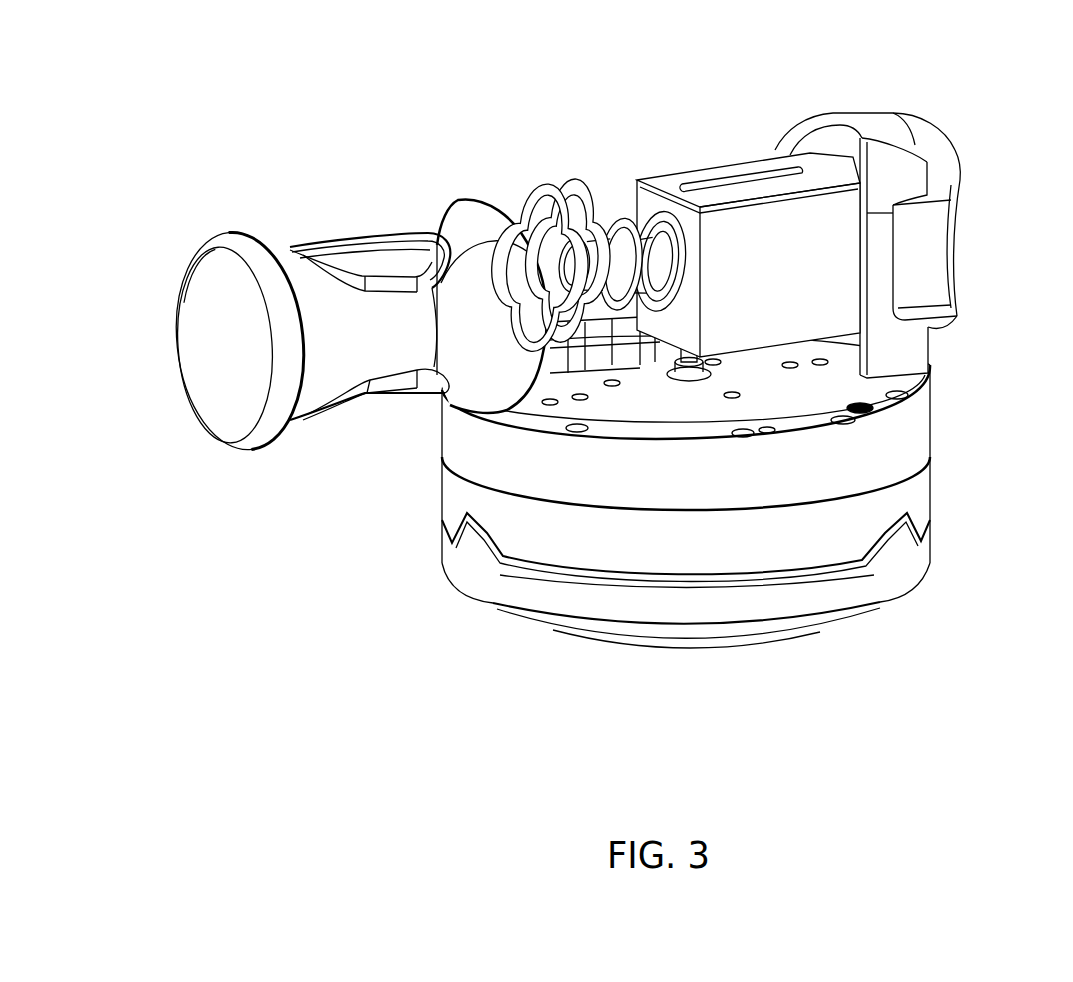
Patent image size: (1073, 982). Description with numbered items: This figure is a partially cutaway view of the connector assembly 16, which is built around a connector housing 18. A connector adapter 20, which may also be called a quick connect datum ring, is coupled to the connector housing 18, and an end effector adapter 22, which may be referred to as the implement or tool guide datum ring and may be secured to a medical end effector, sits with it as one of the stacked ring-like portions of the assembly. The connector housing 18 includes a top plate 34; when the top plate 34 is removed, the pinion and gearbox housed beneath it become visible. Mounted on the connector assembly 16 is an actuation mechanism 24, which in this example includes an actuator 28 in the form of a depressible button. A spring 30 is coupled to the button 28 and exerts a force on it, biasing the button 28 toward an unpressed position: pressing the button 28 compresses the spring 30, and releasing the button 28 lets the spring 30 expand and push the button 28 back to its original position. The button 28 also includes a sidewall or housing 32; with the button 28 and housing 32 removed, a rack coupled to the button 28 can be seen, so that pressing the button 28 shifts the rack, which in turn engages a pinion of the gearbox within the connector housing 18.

The connector assembly 16 is at (427, 122).
The connector housing 18 is at (455, 439).
The connector adapter 20 is at (455, 499).
The end effector adapter 22 is at (458, 563).
The actuation mechanism 24 is at (958, 215).
The actuator 28 is at (932, 277).
The spring 30 is at (577, 220).
The housing 32 is at (763, 217).
The top plate 34 is at (793, 402).